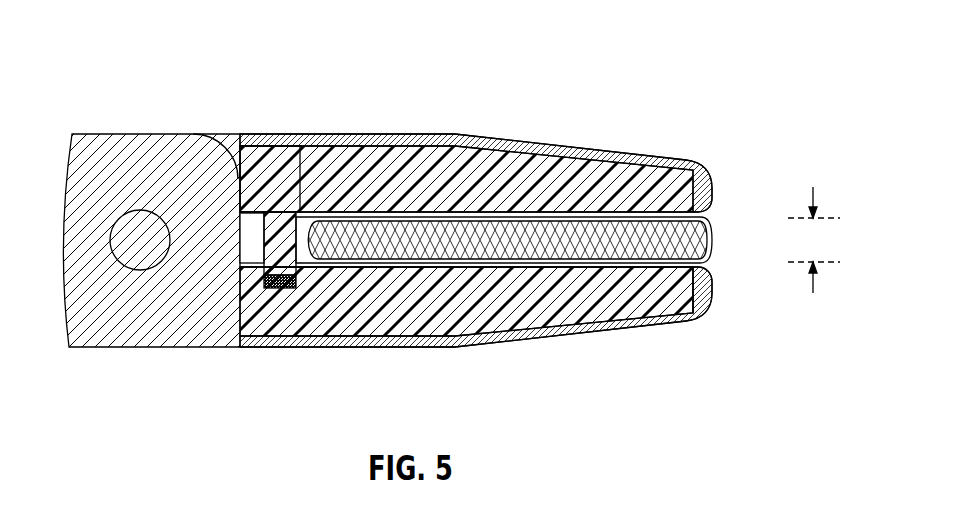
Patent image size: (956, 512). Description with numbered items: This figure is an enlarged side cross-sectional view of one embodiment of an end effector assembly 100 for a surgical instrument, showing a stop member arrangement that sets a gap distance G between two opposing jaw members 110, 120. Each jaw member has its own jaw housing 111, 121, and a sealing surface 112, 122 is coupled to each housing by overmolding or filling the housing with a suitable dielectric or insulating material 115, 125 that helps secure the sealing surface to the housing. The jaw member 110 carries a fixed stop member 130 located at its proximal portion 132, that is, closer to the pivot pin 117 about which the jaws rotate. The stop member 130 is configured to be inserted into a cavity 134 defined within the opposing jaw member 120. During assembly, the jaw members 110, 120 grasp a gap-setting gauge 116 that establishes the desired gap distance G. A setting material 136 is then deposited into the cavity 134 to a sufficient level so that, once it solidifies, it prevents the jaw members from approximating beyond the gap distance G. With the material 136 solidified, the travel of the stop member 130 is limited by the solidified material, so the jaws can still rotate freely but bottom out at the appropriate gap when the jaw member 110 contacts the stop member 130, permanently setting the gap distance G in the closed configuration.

The end effector assembly 100 is at (608, 42).
The jaw member 110 is at (712, 187).
The jaw housing 111 is at (618, 153).
The sealing surface 112 is at (557, 220).
The material 115 is at (418, 180).
The gap-setting gauge 116 is at (700, 240).
The pivot pin 117 is at (140, 236).
The jaw member 120 is at (712, 296).
The jaw housing 121 is at (600, 332).
The sealing surface 122 is at (505, 267).
The material 125 is at (410, 300).
The fixed stop member 130 is at (272, 250).
The proximal portion 132 is at (275, 178).
The cavity 134 is at (280, 288).
The setting material 136 is at (264, 287).